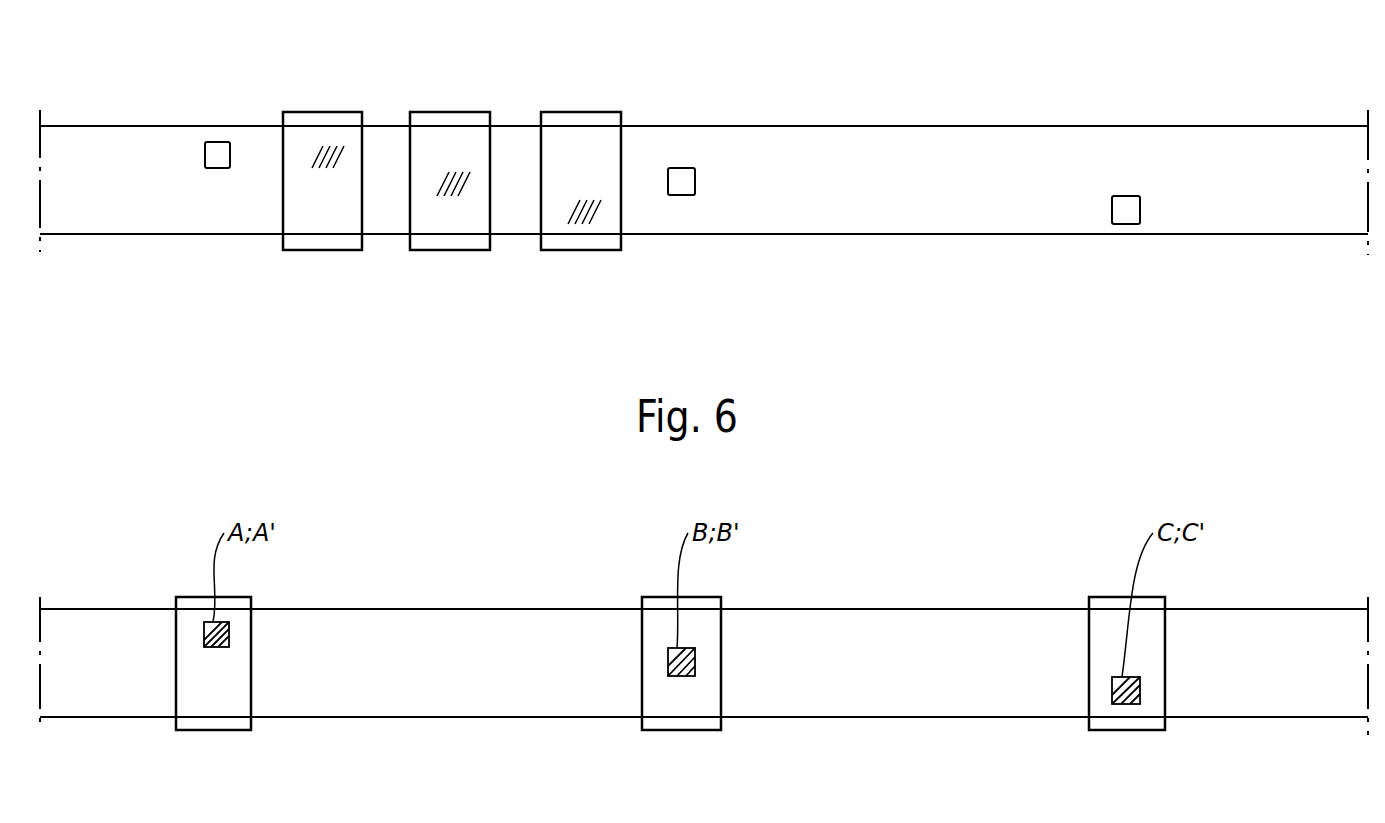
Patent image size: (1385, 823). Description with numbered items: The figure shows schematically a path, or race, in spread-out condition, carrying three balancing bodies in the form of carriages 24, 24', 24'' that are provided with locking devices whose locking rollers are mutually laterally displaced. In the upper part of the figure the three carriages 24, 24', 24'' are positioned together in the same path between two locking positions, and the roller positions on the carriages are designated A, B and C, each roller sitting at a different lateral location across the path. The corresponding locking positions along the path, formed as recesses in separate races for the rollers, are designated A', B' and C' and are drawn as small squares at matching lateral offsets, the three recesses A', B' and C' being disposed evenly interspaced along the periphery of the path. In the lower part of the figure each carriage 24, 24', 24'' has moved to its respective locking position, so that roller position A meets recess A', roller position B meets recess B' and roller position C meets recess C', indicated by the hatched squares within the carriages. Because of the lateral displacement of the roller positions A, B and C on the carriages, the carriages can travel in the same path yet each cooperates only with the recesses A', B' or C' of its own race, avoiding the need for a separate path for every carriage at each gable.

The carriage 24 is at (277, 452).
The carriage 24' is at (582, 452).
The carriage 24'' is at (874, 452).
The roller position A is at (330, 88).
The locking position A' is at (220, 102).
The roller position B is at (453, 100).
The locking position B' is at (714, 115).
The roller position C is at (593, 114).
The locking position C' is at (1140, 130).